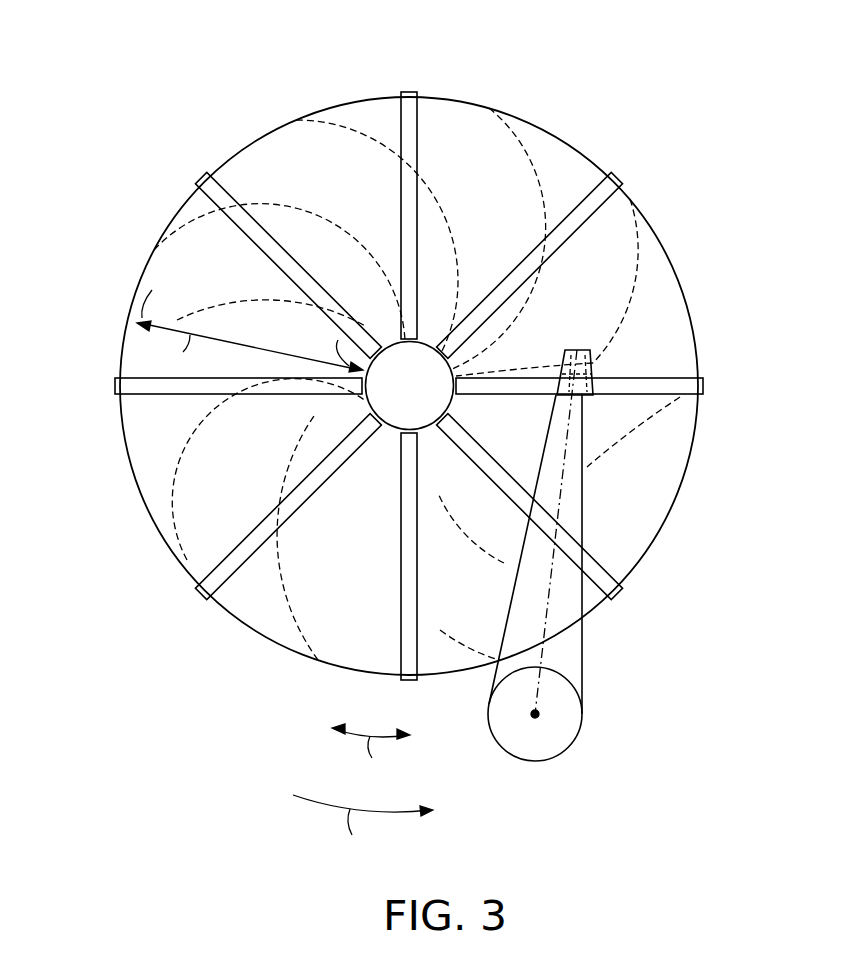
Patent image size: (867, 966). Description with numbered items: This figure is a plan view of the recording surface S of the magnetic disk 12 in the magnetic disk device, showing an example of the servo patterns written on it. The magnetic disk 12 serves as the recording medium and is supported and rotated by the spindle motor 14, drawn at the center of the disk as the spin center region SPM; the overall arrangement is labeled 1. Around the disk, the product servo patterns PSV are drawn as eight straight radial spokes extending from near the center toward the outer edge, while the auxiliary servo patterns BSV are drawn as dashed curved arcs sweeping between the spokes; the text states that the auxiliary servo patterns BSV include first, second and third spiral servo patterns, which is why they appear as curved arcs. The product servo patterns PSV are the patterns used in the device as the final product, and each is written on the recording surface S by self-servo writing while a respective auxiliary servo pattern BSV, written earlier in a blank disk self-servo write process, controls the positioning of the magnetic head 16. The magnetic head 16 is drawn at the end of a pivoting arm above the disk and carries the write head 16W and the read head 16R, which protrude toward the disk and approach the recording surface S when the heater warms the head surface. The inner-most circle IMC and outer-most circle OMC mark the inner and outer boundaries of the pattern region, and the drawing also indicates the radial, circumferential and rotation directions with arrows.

The substrate processing apparatus 1 is at (712, 77).
The magnetic disk 12 is at (698, 336).
The spindle motor 14 is at (410, 419).
The magnetic head 16 is at (579, 553).
The write head 16W is at (596, 368).
The read head 16R is at (591, 394).
The recording surface S is at (628, 242).
The spin center region SPM is at (410, 386).
The inner-most circle IMC is at (431, 427).
The outer-most circle OMC is at (489, 108).
The product servo pattern PSV is at (410, 91).
The auxiliary servo pattern BSV is at (353, 127).